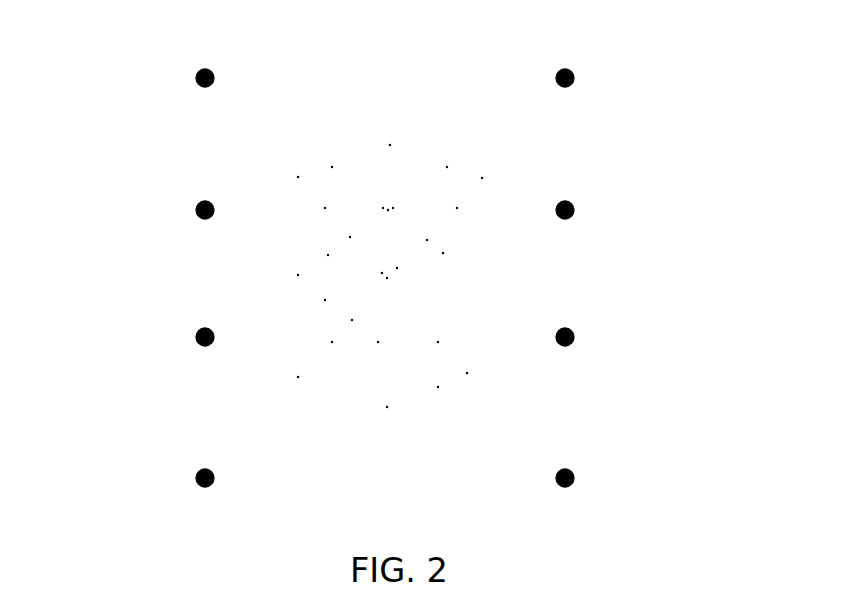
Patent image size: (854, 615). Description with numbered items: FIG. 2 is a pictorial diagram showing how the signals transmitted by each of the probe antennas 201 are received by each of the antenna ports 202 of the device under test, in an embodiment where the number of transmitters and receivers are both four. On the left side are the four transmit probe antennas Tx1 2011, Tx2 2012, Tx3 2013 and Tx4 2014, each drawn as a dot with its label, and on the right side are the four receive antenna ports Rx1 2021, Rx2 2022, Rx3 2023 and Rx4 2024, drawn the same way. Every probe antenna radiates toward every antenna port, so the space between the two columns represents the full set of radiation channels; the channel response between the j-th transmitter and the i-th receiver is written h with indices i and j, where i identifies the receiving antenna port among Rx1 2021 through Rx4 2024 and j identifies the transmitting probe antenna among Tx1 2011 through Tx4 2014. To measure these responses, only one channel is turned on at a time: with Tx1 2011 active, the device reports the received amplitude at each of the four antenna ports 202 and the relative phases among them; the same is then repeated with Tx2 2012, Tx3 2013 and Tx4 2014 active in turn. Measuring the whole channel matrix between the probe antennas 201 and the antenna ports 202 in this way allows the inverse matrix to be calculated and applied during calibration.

The probe antennas 201 is at (146, 249).
The probe antenna Tx1 2011 is at (204, 68).
The probe antenna Tx2 2012 is at (204, 200).
The probe antenna Tx3 2013 is at (204, 327).
The probe antenna Tx4 2014 is at (204, 468).
The antenna ports 202 is at (631, 257).
The antenna port Rx1 2021 is at (566, 68).
The antenna port Rx2 2022 is at (566, 200).
The antenna port Rx3 2023 is at (566, 327).
The antenna port Rx4 2024 is at (566, 468).